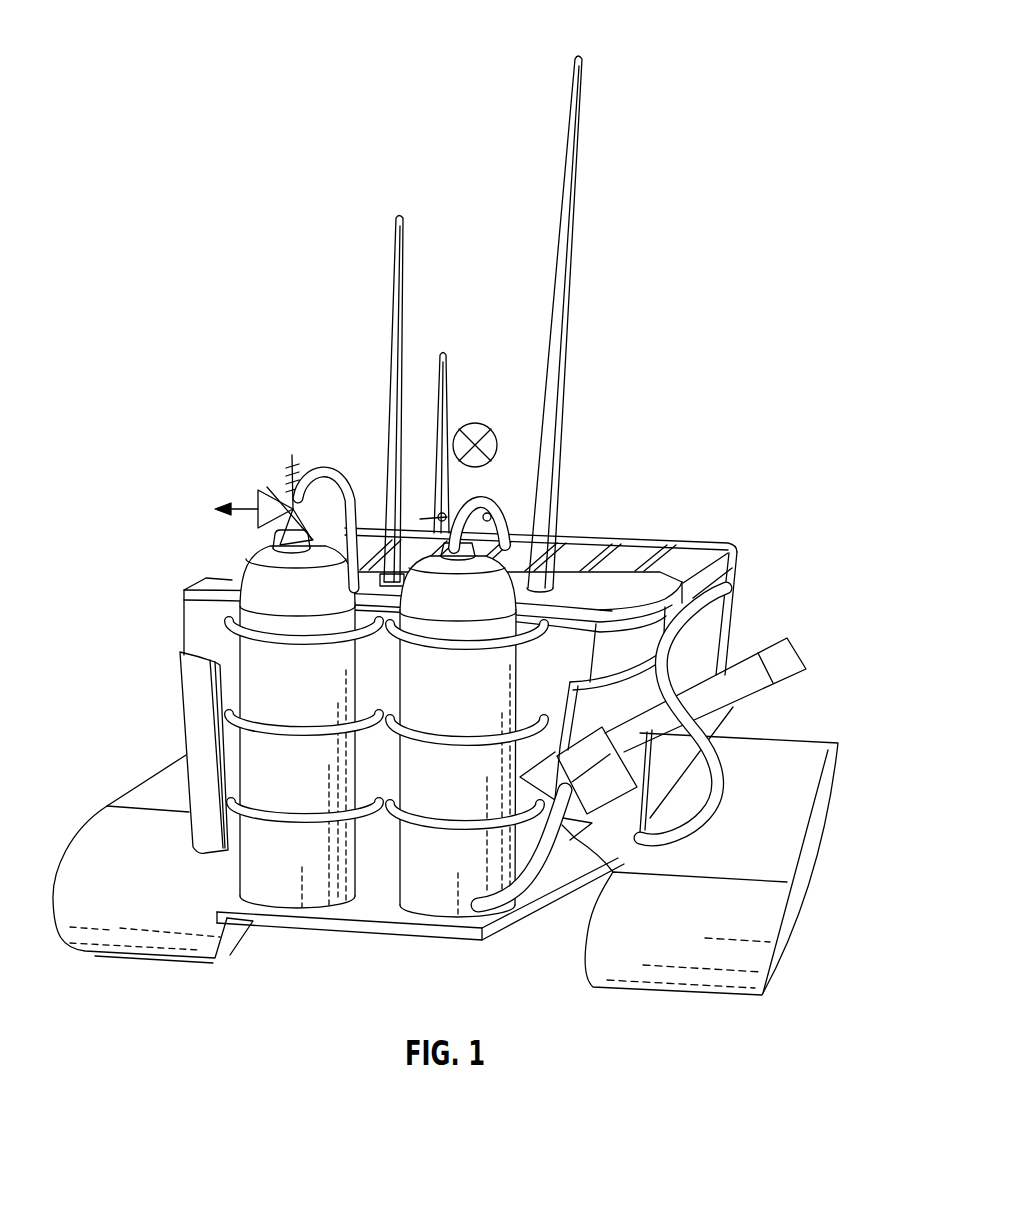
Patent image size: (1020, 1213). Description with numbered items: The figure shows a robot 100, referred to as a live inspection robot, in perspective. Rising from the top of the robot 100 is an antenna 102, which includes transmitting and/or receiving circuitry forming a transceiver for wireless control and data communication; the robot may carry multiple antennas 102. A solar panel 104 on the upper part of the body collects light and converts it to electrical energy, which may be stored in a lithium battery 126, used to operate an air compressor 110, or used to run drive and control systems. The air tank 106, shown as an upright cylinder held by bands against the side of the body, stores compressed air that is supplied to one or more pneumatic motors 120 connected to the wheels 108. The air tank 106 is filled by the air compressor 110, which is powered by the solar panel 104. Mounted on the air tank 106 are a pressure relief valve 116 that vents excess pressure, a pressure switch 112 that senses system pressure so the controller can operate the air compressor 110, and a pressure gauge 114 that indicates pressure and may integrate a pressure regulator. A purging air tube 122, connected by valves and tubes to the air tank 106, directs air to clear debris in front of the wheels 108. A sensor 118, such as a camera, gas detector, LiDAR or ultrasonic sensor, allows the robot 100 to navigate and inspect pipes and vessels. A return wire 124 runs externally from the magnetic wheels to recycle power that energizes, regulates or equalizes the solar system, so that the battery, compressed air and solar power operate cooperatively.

The robot 100 is at (168, 252).
The antenna 102 is at (392, 258).
The solar panel 104 is at (674, 553).
The air tank 106 is at (255, 843).
The wheels 108 is at (818, 838).
The air compressor 110 is at (192, 680).
The pressure switch 112 is at (485, 500).
The pressure gauge 114 is at (471, 421).
The pressure relief valve 116 is at (280, 526).
The sensor 118 is at (630, 441).
The pneumatic motor 120 is at (350, 927).
The purging air tube 122 is at (797, 661).
The return wire 124 is at (730, 605).
The lithium battery 126 is at (592, 587).